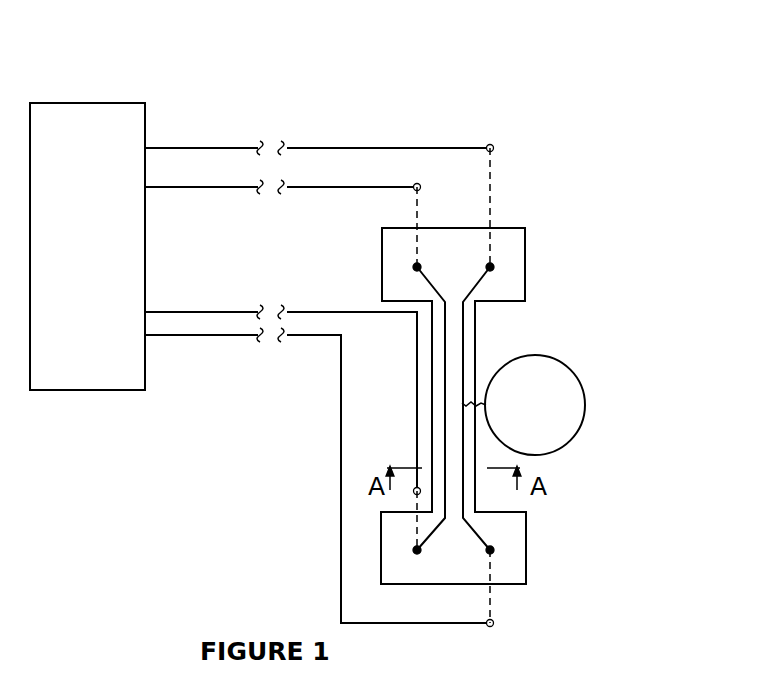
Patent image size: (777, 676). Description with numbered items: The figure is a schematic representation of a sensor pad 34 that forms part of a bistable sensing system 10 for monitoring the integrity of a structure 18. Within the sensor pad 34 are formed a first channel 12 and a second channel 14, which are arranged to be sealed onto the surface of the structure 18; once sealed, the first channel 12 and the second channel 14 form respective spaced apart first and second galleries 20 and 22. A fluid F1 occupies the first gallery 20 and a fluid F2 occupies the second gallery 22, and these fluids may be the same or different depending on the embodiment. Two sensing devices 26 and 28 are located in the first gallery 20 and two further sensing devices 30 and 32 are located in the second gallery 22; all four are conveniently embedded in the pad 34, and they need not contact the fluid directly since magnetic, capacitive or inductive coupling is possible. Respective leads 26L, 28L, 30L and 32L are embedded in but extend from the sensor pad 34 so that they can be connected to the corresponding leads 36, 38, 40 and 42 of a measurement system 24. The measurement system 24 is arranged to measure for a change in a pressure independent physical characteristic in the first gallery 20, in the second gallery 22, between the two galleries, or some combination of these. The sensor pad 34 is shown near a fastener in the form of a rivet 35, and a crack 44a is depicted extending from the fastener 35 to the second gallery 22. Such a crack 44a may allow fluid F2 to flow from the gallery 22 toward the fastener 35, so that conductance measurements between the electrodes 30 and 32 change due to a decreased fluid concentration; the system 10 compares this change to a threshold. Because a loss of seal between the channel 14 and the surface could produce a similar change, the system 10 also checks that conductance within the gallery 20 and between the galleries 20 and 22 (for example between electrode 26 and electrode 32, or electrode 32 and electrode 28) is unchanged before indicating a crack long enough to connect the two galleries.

The bistable sensing system 10 is at (491, 100).
The first channel 12 is at (337, 408).
The second channel 14 is at (551, 408).
The structure 18 is at (645, 378).
The first gallery 20 is at (445, 383).
The second gallery 22 is at (463, 322).
The measurement system 24 is at (133, 118).
The sensing device 26 is at (417, 267).
The lead 26L is at (418, 207).
The sensing device 28 is at (417, 550).
The lead 28L is at (418, 500).
The sensing device 30 is at (490, 267).
The lead 30L is at (490, 202).
The sensing device 32 is at (490, 550).
The lead 32L is at (492, 597).
The sensor pad 34 is at (467, 240).
The rivet 35 is at (562, 422).
The lead 36 is at (233, 188).
The lead 38 is at (202, 310).
The lead 40 is at (237, 148).
The lead 42 is at (237, 336).
The crack 44a is at (470, 400).